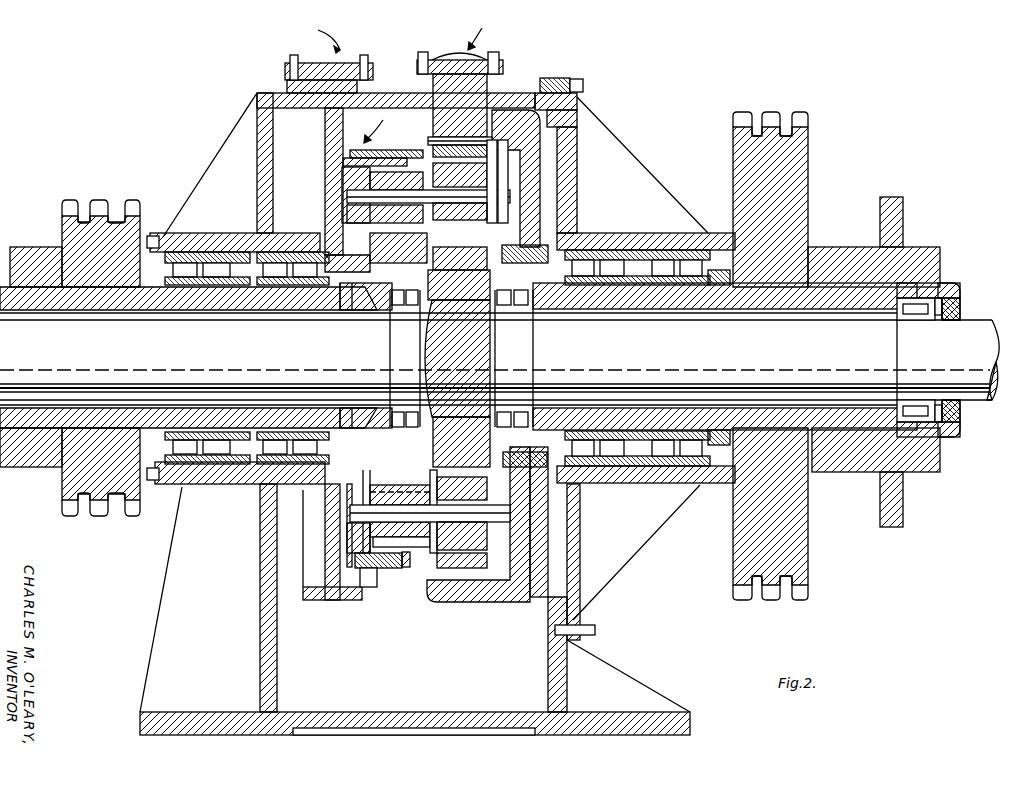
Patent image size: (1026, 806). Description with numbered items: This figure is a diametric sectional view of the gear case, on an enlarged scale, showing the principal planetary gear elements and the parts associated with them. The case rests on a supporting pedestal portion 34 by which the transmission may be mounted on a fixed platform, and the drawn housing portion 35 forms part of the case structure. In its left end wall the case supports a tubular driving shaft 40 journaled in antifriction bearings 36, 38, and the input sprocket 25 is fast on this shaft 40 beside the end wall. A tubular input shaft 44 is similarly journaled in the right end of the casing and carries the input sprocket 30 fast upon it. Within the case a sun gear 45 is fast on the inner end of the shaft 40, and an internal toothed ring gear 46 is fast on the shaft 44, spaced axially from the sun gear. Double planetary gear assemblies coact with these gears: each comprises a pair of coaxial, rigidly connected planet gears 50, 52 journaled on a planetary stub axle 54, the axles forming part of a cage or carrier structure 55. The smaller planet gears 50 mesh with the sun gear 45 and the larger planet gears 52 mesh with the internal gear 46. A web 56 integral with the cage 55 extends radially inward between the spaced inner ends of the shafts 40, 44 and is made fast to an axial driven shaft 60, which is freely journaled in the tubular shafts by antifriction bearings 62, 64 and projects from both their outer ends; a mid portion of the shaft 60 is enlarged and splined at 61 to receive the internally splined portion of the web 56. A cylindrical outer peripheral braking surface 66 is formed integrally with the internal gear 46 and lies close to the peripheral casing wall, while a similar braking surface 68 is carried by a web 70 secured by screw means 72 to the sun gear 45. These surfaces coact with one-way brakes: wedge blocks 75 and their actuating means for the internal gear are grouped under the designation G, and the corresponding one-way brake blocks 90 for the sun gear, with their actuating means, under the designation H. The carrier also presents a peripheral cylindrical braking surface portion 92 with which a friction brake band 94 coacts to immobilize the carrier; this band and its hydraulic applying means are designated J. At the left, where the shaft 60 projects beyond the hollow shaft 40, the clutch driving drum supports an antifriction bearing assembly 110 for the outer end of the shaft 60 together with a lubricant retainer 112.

The input sprocket 25 is at (132, 204).
The input sprocket 30 is at (743, 178).
The supporting pedestal portion 34 is at (685, 718).
The housing 35 is at (530, 95).
The antifriction bearing 36 is at (213, 252).
The antifriction bearing 38 is at (300, 252).
The tubular driving shaft 40 is at (147, 300).
The tubular input shaft 44 is at (690, 300).
The sun gear 45 is at (380, 355).
The internal toothed ring gear 46 is at (425, 148).
The planet gear 50 is at (343, 162).
The planet gear 52 is at (490, 160).
The planetary stub axle 54 is at (493, 510).
The cage or carrier structure 55 is at (548, 534).
The web 56 is at (496, 415).
The axial driven shaft 60 is at (499, 359).
The enlarged splined portion 61 is at (432, 335).
The antifriction bearing 62 is at (415, 306).
The antifriction bearing 64 is at (516, 306).
The cylindrical outer peripheral braking surface 66 is at (503, 112).
The braking surface 68 is at (302, 124).
The web 70 is at (338, 178).
The screw means 72 is at (340, 295).
The wedge block 75 is at (472, 76).
The one-way brake block 90 is at (338, 62).
The peripheral cylindrical braking surface portion 92 is at (395, 568).
The friction brake band 94 is at (370, 587).
The antifriction bearing assembly 110 is at (915, 312).
The lubricant retainer 112 is at (962, 300).
The one-way brake and actuating means for the sun gear H is at (315, 36).
The one-way braking means for the internal gear G is at (483, 31).
The carrier brake and applying means J is at (375, 124).